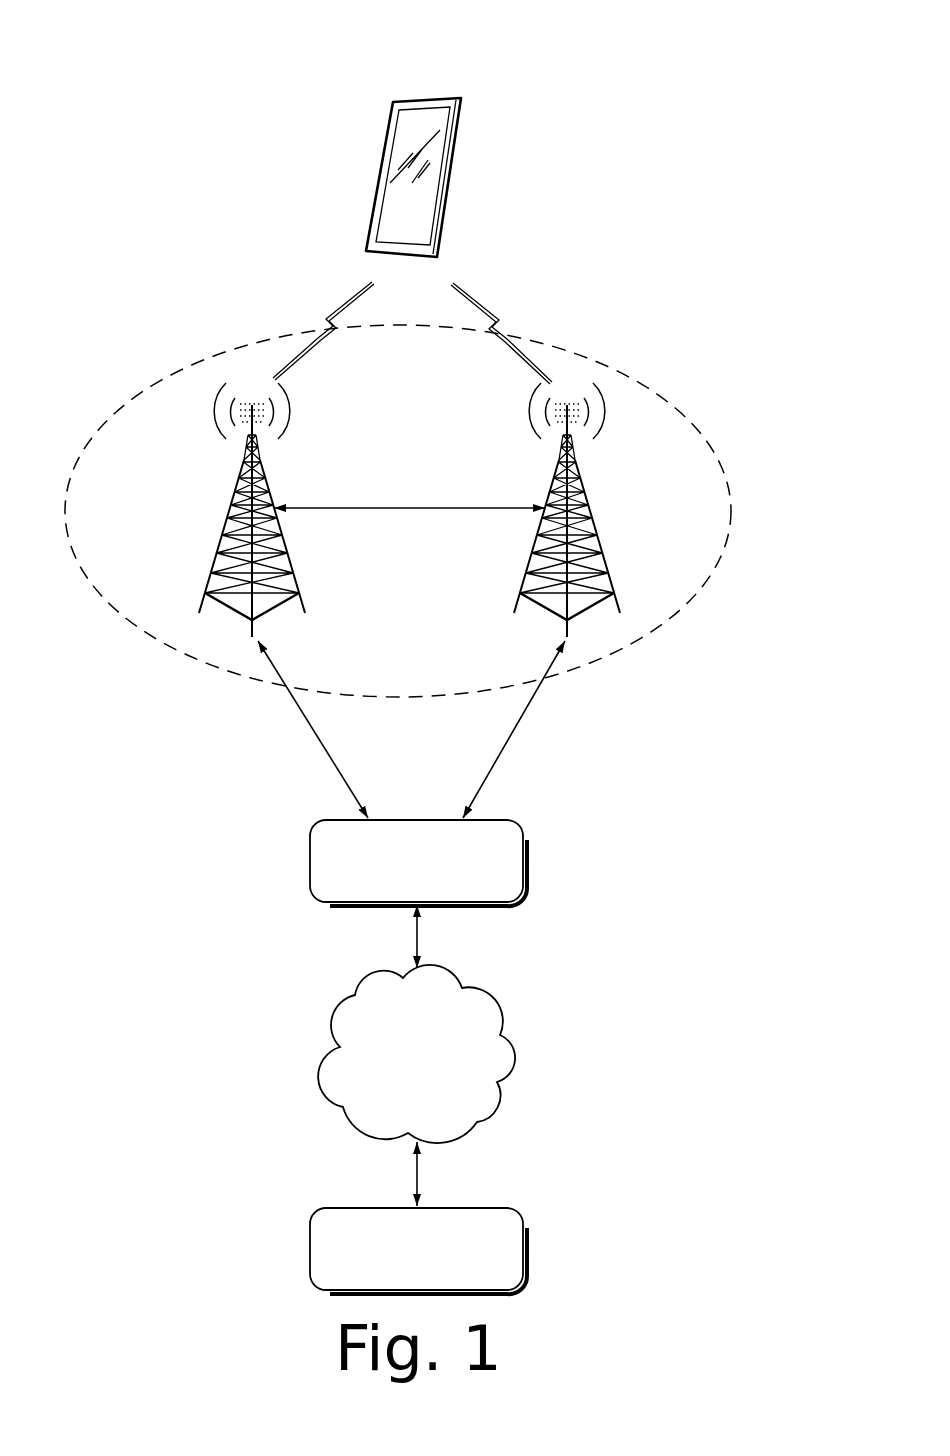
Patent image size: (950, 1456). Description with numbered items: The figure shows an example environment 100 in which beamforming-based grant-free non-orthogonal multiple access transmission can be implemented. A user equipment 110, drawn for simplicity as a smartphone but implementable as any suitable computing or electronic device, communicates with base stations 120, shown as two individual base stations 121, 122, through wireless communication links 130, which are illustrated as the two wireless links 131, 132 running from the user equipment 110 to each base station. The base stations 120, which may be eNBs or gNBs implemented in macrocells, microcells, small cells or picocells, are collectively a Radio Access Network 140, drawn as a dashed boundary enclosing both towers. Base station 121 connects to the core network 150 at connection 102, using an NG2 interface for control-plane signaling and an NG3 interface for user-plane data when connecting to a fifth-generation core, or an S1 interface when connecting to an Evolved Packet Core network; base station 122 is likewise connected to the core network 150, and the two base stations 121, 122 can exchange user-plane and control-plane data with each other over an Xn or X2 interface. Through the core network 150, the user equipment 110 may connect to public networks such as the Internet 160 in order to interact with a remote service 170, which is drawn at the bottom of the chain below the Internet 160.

The environment 100 is at (117, 47).
The user equipment 110 is at (468, 92).
The base stations 120 is at (135, 574).
The base station 121 is at (236, 487).
The base station 122 is at (582, 487).
The connection 102 is at (375, 505).
The wireless communication links 130 is at (423, 299).
The wireless link 131 is at (328, 308).
The wireless link 132 is at (497, 312).
The Radio Access Network 140 is at (705, 435).
The core network 150 is at (399, 886).
The Internet 160 is at (399, 1072).
The remote service 170 is at (399, 1274).